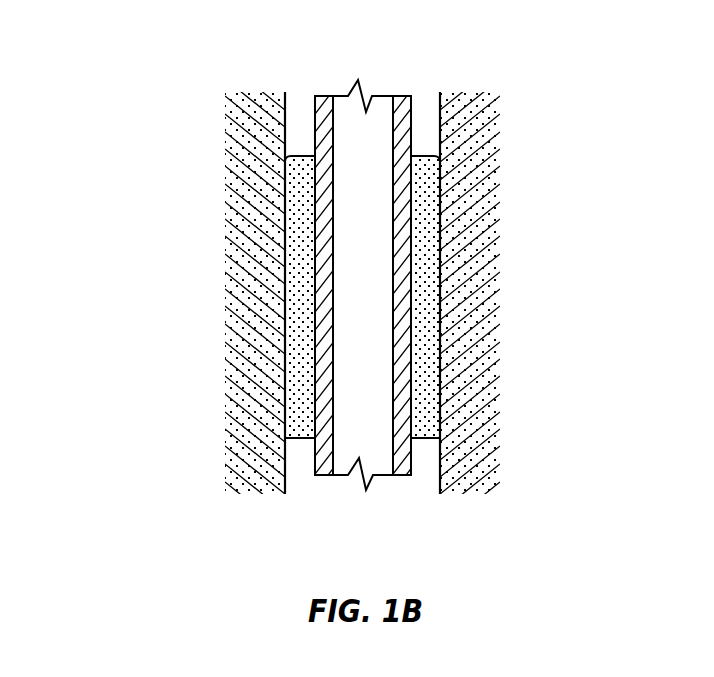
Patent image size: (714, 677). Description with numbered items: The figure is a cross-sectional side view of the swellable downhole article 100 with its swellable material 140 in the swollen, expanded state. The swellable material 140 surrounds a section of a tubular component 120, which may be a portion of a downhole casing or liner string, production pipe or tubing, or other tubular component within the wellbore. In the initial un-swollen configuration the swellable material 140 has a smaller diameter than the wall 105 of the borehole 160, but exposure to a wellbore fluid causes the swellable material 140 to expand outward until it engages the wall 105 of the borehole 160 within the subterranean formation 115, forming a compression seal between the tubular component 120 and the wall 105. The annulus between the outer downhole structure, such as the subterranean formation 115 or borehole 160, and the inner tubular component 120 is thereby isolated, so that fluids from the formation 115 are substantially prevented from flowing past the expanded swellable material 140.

The swellable downhole article 100 is at (156, 118).
The wall 105 is at (289, 107).
The subterranean formation 115 is at (477, 147).
The tubular component 120 is at (313, 456).
The swellable material 140 is at (422, 440).
The borehole 160 is at (440, 482).